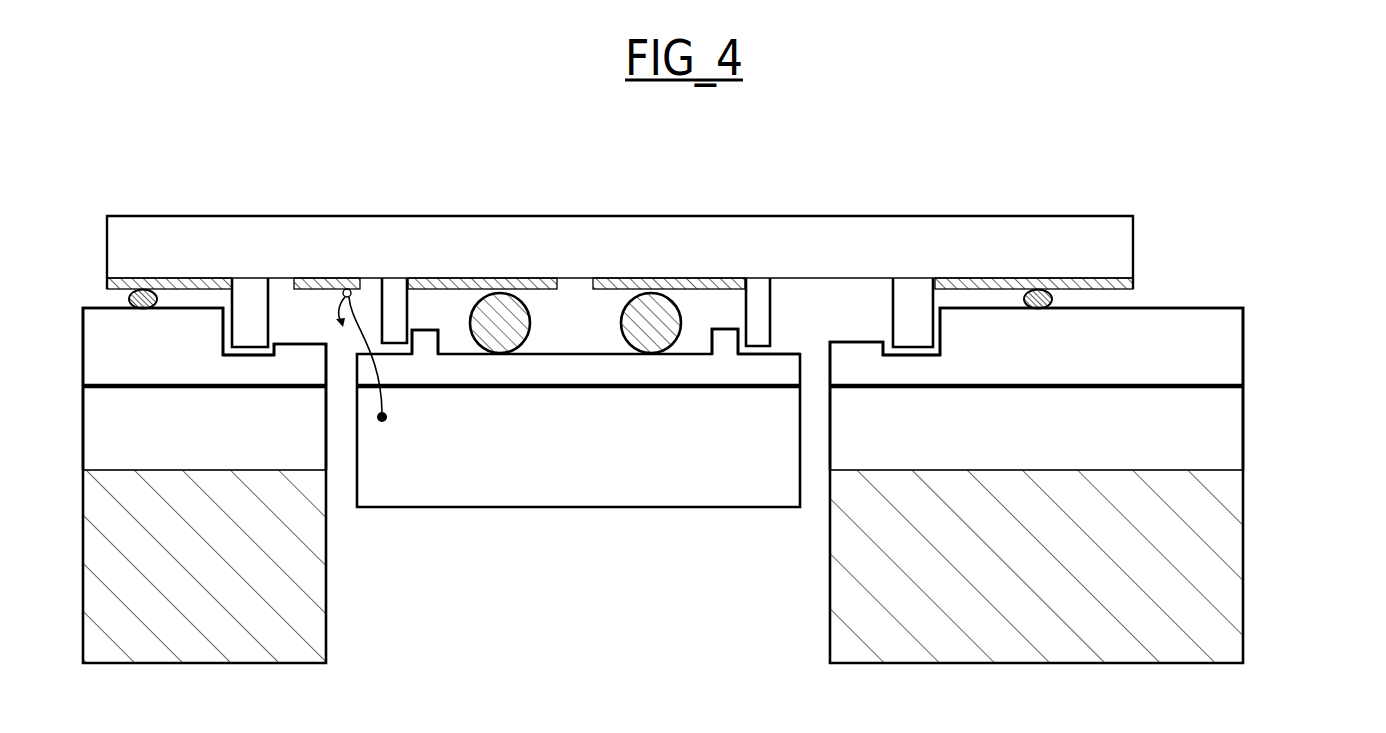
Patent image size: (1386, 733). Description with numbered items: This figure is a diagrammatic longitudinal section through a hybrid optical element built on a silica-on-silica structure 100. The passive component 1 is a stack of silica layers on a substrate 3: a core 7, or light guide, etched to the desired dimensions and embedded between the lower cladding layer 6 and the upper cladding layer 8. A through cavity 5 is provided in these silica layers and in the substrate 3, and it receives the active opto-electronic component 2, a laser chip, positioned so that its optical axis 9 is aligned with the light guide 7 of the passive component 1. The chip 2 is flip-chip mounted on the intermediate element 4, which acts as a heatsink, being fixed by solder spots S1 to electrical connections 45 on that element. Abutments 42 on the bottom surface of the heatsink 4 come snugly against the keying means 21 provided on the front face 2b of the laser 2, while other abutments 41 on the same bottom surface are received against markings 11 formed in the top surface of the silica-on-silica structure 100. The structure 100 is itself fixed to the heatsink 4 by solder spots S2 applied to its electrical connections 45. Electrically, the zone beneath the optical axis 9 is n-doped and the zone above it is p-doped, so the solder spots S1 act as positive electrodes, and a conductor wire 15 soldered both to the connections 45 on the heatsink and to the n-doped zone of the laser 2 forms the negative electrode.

The silica-on-silica structure 100 is at (733, 485).
The passive component 1 is at (702, 485).
The active opto-electronic component 2 is at (433, 507).
The front face of the laser 2b is at (790, 343).
The substrate 3 is at (685, 566).
The intermediate element 4 is at (1117, 233).
The cavity 5 is at (812, 490).
The cladding layer 6 is at (1233, 439).
The core 7 is at (1233, 389).
The cladding layer 8 is at (1233, 346).
The optical axis 9 is at (530, 388).
The markings 11 is at (257, 365).
The conductor wire 15 is at (347, 289).
The keying means 21 is at (432, 323).
The abutments 41 is at (250, 308).
The abutments 42 is at (389, 296).
The electrical connections 45 is at (325, 278).
The solder spots S1 is at (503, 312).
The solder spots S2 is at (148, 289).